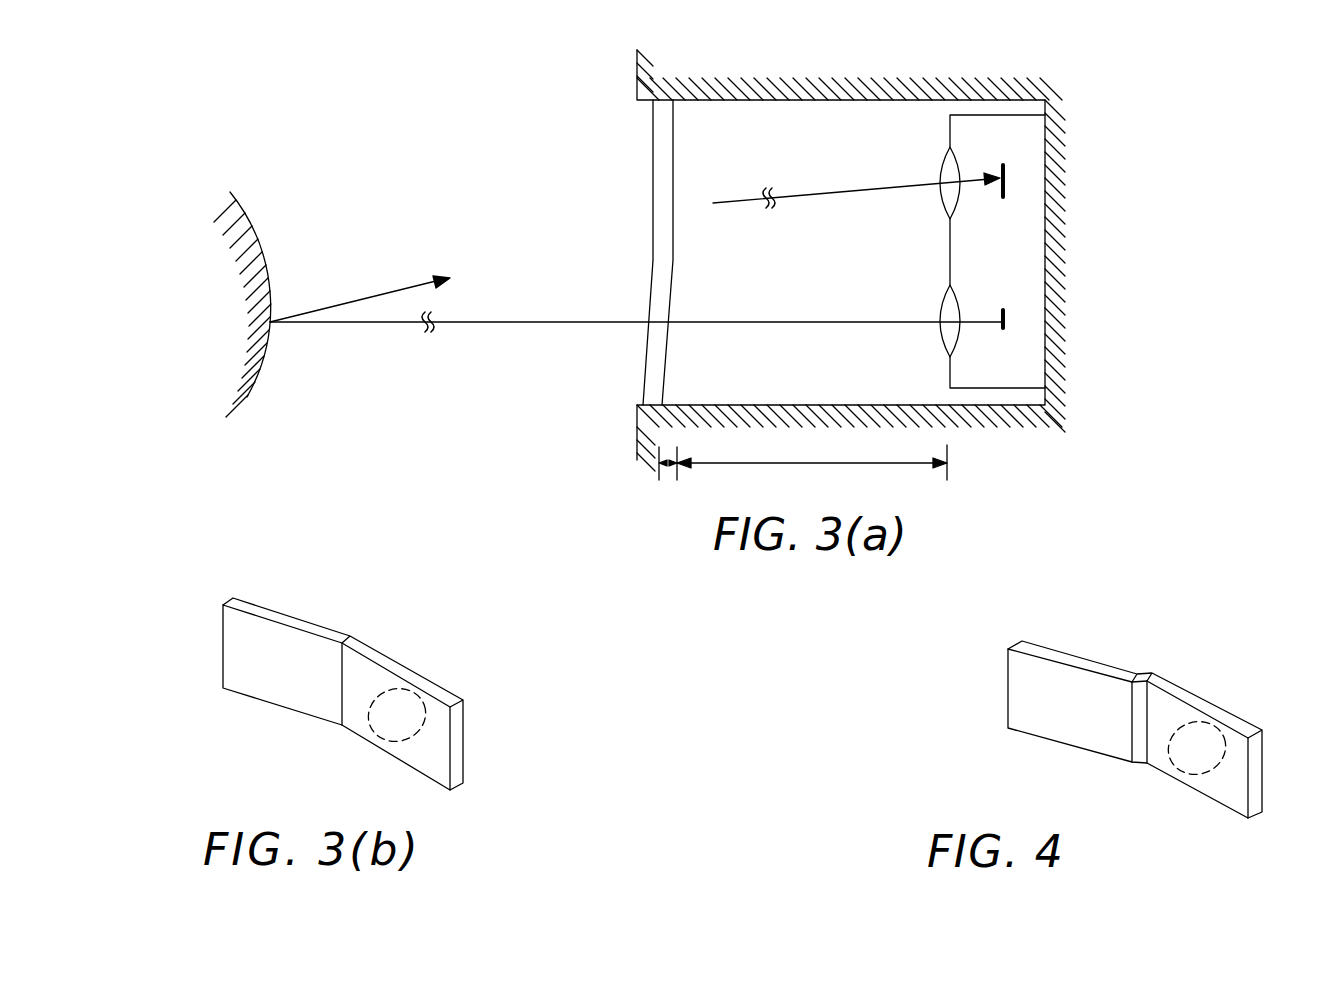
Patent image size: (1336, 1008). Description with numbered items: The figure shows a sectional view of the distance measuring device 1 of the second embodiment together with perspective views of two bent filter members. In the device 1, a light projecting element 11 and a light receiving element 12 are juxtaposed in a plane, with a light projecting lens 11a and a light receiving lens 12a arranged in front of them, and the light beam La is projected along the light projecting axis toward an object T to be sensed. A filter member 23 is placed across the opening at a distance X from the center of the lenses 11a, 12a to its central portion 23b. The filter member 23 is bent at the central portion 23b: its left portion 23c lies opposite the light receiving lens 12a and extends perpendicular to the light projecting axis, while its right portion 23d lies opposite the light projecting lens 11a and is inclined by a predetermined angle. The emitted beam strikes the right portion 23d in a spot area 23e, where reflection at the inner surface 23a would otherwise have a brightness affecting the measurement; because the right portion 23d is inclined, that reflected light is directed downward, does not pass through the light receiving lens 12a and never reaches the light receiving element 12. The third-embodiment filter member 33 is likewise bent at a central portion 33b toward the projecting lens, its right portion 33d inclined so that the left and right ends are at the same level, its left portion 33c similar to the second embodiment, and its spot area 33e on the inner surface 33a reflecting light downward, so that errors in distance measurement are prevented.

In FIG. 3A, the distance measuring device 1 is at (1018, 138).
In FIG. 3A, the object to be sensed T is at (252, 226).
In FIG. 3A, the filter member 23 is at (630, 133).
In FIG. 3B, the filter member 23 is at (198, 604).
In FIG. 3A, the inner surface 23a is at (670, 357).
In FIG. 3B, the inner surface 23a is at (465, 742).
In FIG. 3A, the central portion 23b is at (655, 244).
In FIG. 3B, the central portion 23b is at (352, 642).
In FIG. 3A, the left portion 23c is at (655, 150).
In FIG. 3B, the left portion 23c is at (270, 680).
In FIG. 3A, the right portion 23d is at (647, 357).
In FIG. 3B, the right portion 23d is at (428, 758).
In FIG. 3B, the spot area 23e is at (373, 723).
In FIG. 3A, the light receiving lens 12a is at (945, 182).
In FIG. 3A, the light receiving element 12 is at (1008, 181).
In FIG. 3A, the light projecting lens 11a is at (945, 330).
In FIG. 3A, the light projecting element 11 is at (1008, 321).
In FIG. 3A, the light beam La is at (483, 328).
In FIG. 3A, the distance between lens center and filter center X is at (803, 455).
In FIG. 4, the filter member 33 is at (983, 651).
In FIG. 4, the inner surface 33a is at (1265, 784).
In FIG. 4, the central portion 33b is at (1143, 677).
In FIG. 4, the left portion 33c is at (1065, 725).
In FIG. 4, the right portion 33d is at (1222, 785).
In FIG. 4, the spot area 33e is at (1198, 722).